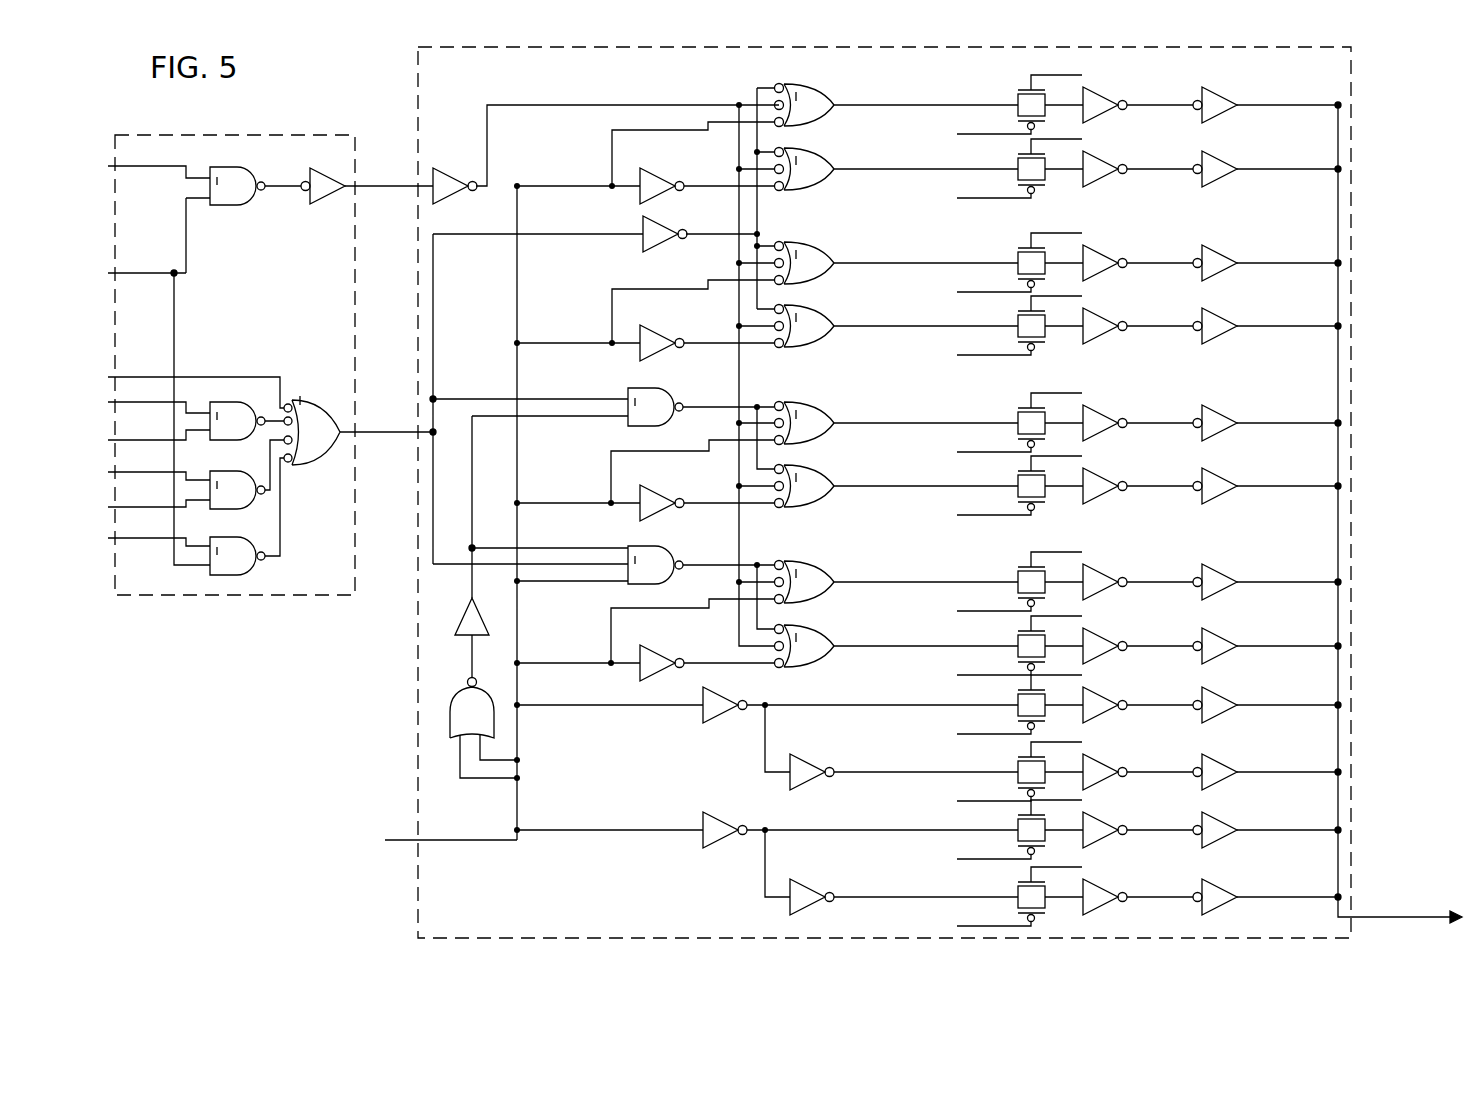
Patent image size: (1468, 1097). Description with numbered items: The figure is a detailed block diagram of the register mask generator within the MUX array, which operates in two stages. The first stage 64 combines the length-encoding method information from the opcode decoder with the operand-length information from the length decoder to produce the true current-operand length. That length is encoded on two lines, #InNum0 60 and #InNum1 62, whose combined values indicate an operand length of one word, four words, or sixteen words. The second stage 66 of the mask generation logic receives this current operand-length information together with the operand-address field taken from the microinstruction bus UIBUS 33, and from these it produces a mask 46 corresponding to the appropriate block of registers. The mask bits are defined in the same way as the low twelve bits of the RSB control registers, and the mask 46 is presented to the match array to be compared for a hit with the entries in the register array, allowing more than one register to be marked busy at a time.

The mask generator first stage 64 is at (347, 135).
The #InNum0 line 60 is at (405, 192).
The #InNum1 line 62 is at (402, 437).
The second stage of mask generation logic 66 is at (1353, 93).
The UIBUS 33 is at (405, 843).
The mask 46 is at (1430, 920).